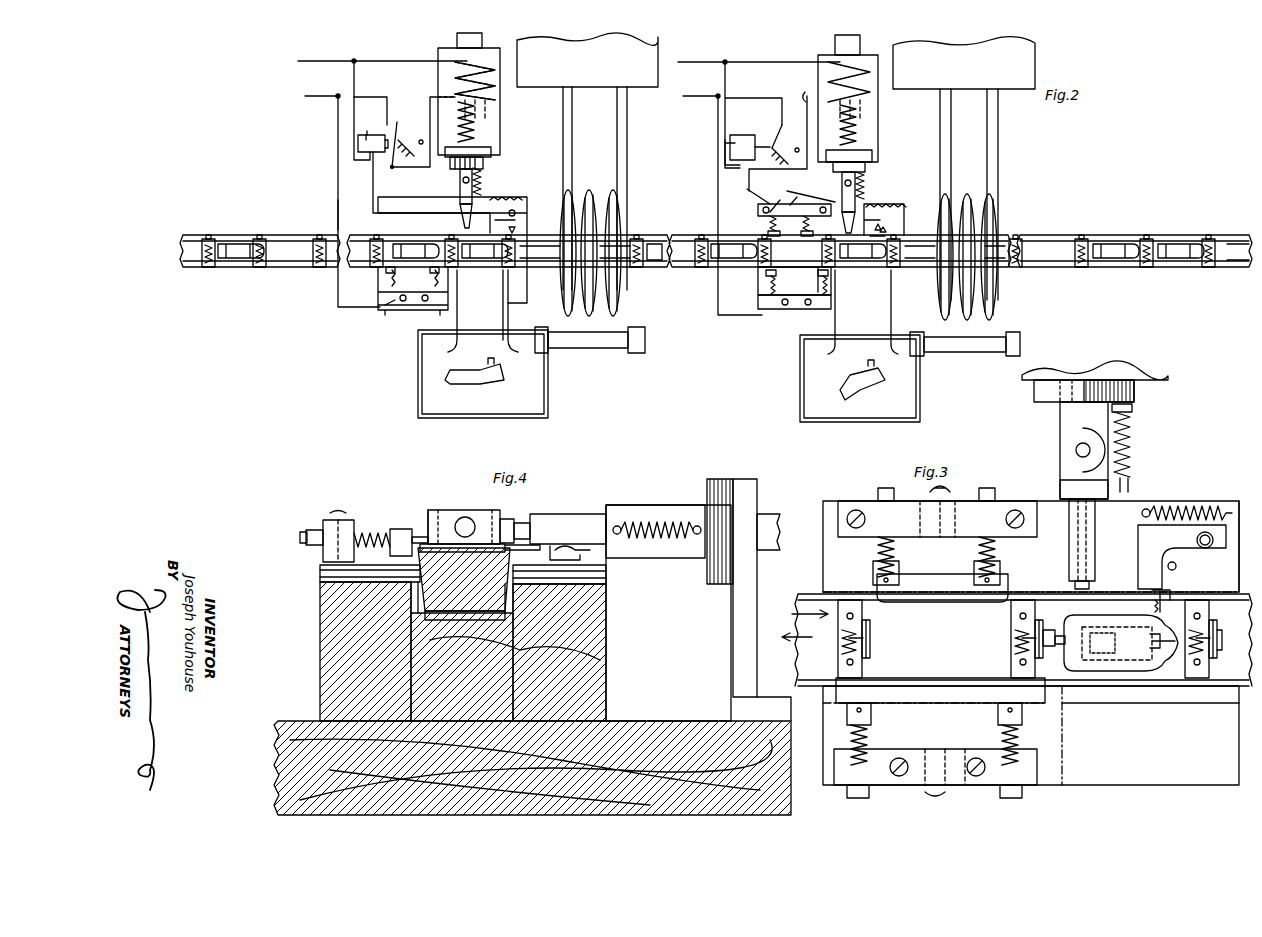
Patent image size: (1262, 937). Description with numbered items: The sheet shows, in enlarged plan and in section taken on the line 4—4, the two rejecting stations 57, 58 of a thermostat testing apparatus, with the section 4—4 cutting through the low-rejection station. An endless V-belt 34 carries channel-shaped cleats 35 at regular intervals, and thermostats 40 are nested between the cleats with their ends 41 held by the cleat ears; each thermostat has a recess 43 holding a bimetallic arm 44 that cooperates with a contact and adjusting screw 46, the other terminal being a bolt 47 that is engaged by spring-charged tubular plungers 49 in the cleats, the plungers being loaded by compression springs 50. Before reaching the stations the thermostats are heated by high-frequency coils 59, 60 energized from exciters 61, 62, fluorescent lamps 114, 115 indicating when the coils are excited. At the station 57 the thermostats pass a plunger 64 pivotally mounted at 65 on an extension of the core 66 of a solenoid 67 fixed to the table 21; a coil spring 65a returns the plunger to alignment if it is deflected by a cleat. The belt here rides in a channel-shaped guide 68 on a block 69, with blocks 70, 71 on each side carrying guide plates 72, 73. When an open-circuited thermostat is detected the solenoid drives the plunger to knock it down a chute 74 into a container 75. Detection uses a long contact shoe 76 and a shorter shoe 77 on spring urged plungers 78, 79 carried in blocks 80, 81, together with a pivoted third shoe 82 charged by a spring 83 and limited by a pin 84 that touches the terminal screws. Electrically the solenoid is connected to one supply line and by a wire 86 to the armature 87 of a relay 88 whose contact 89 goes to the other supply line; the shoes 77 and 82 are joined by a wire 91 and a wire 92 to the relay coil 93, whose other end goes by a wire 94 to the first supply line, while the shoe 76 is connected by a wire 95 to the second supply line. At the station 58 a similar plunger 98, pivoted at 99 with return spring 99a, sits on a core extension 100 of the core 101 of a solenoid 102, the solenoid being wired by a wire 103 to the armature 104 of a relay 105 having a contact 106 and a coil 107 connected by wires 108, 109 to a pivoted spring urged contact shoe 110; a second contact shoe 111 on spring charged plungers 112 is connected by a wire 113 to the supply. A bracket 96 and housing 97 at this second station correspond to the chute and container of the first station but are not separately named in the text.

In FIG. 4, the table 21 is at (655, 732).
In FIG. 2, the endless V-belt 34 is at (280, 236).
In FIG. 3, the endless V-belt 34 is at (1230, 650).
In FIG. 4, the endless V-belt 34 is at (450, 608).
In FIG. 2, the cleats 35 is at (206, 268).
In FIG. 3, the cleats 35 is at (1243, 612).
In FIG. 4, the cleats 35 is at (427, 509).
In FIG. 2, the thermostats 40 is at (232, 254).
In FIG. 3, the thermostats 40 is at (1121, 678).
In FIG. 3, the ends of the thermostats 41 is at (1168, 665).
In FIG. 3, the recess 43 is at (1225, 660).
In FIG. 3, the bimetallic arm 44 is at (1148, 641).
In FIG. 3, the contact and adjusting screw 46 is at (1156, 597).
In FIG. 4, the contact and adjusting screw 46 is at (512, 518).
In FIG. 3, the bolt 47 is at (1056, 628).
In FIG. 3, the tubular plungers 49 is at (870, 648).
In FIG. 4, the tubular plungers 49 is at (461, 513).
In FIG. 3, the compression springs 50 is at (862, 632).
In FIG. 2, the station 57 is at (774, 335).
In FIG. 2, the station 58 is at (378, 333).
In FIG. 2, the high-frequency coil 59 is at (1000, 295).
In FIG. 2, the high-frequency coil 60 is at (622, 288).
In FIG. 2, the exciter or generator 61 is at (1025, 58).
In FIG. 2, the exciter or generator 62 is at (650, 52).
In FIG. 2, the plunger 64 is at (868, 200).
In FIG. 3, the plunger 64 is at (1096, 531).
In FIG. 4, the plunger 64 is at (573, 514).
In FIG. 2, the pivotal connection 65 is at (868, 175).
In FIG. 3, the pivotal connection 65 is at (1078, 447).
In FIG. 2, the coil spring 65a is at (868, 185).
In FIG. 3, the coil spring 65a is at (1135, 440).
In FIG. 4, the coil spring 65a is at (660, 545).
In FIG. 2, the core 66 is at (862, 133).
In FIG. 2, the solenoid 67 is at (822, 48).
In FIG. 3, the solenoid 67 is at (1160, 399).
In FIG. 4, the solenoid 67 is at (708, 638).
In FIG. 4, the channel-shaped guide 68 is at (455, 630).
In FIG. 4, the block 69 is at (480, 665).
In FIG. 4, the block 70 is at (600, 612).
In FIG. 3, the block 71 is at (1118, 775).
In FIG. 4, the block 71 is at (320, 600).
In FIG. 3, the guide plate 72 is at (1138, 512).
In FIG. 4, the guide plate 72 is at (606, 572).
In FIG. 3, the guide plate 73 is at (1055, 750).
In FIG. 4, the guide plate 73 is at (320, 573).
In FIG. 2, the chute 74 is at (872, 317).
In FIG. 2, the container 75 is at (905, 390).
In FIG. 2, the contact shoe 76 is at (770, 285).
In FIG. 3, the contact shoe 76 is at (958, 682).
In FIG. 4, the contact shoe 76 is at (398, 529).
In FIG. 2, the contact shoe 77 is at (758, 208).
In FIG. 3, the contact shoe 77 is at (934, 600).
In FIG. 2, the spring urged plungers 78 is at (830, 292).
In FIG. 3, the spring urged plungers 78 is at (874, 733).
In FIG. 4, the spring urged plungers 78 is at (372, 530).
In FIG. 2, the spring urged plungers 79 is at (768, 225).
In FIG. 3, the spring urged plungers 79 is at (876, 552).
In FIG. 2, the metal block 80 is at (790, 309).
In FIG. 3, the metal block 80 is at (912, 785).
In FIG. 4, the metal block 80 is at (330, 525).
In FIG. 2, the metal block 81 is at (760, 200).
In FIG. 3, the metal block 81 is at (1010, 535).
In FIG. 2, the third contact shoe 82 is at (887, 230).
In FIG. 3, the third contact shoe 82 is at (1150, 565).
In FIG. 4, the third contact shoe 82 is at (520, 522).
In FIG. 2, the spring 83 is at (898, 205).
In FIG. 3, the spring 83 is at (1185, 505).
In FIG. 3, the pin 84 is at (1177, 566).
In FIG. 2, the wire 86 is at (805, 99).
In FIG. 2, the armature 87 is at (768, 143).
In FIG. 2, the relay 88 is at (730, 140).
In FIG. 2, the contact 89 is at (778, 122).
In FIG. 2, the wire 91 is at (812, 186).
In FIG. 2, the wire 92 is at (755, 178).
In FIG. 2, the relay coil 93 is at (725, 147).
In FIG. 2, the wire 94 is at (716, 94).
In FIG. 2, the wire 95 is at (716, 287).
In FIG. 2, the bracket 96 is at (490, 315).
In FIG. 2, the housing 97 is at (530, 381).
In FIG. 2, the plunger 98 is at (478, 203).
In FIG. 2, the pivotal connection 99 is at (460, 181).
In FIG. 2, the coil spring 99a is at (480, 180).
In FIG. 2, the core extension 100 is at (480, 130).
In FIG. 2, the core 101 is at (482, 40).
In FIG. 2, the solenoid 102 is at (455, 79).
In FIG. 2, the wire 103 is at (418, 175).
In FIG. 2, the armature 104 is at (399, 152).
In FIG. 2, the relay 105 is at (367, 131).
In FIG. 2, the contact 106 is at (390, 124).
In FIG. 2, the coil 107 is at (358, 144).
In FIG. 2, the wire 108 is at (370, 84).
In FIG. 2, the wire 109 is at (370, 190).
In FIG. 2, the contact shoe 110 is at (528, 220).
In FIG. 2, the second contact shoe 111 is at (380, 290).
In FIG. 2, the spring charged plungers 112 is at (386, 285).
In FIG. 2, the wire 113 is at (336, 215).
In FIG. 2, the fluorescent lamp 114 is at (975, 346).
In FIG. 2, the fluorescent lamp 115 is at (600, 346).
In FIG. 3, the section line 4— 4 is at (1237, 474).